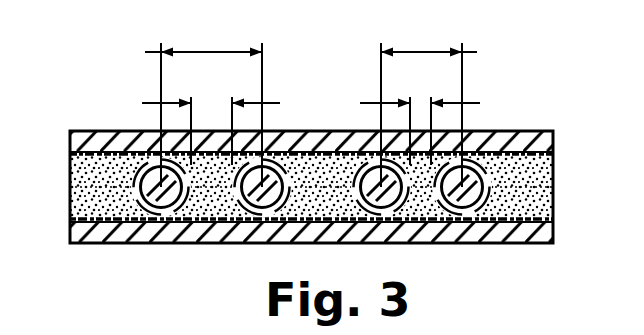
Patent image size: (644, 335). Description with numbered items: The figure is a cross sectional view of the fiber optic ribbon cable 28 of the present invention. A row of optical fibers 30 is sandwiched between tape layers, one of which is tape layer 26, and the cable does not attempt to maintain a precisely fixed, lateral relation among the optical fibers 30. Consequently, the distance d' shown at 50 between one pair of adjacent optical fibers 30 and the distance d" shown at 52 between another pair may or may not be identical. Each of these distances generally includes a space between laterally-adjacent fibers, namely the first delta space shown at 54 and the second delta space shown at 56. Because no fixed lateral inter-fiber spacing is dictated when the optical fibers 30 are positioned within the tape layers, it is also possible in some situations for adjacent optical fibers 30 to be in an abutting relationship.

The tape layer 26 is at (68, 132).
The fiber optic ribbon cable 28 is at (68, 190).
The optical fibers 30 is at (226, 220).
The distance d' 50 is at (198, 50).
The distance d" 52 is at (419, 50).
The space Δ1 54 is at (152, 103).
The space Δ2 56 is at (365, 101).